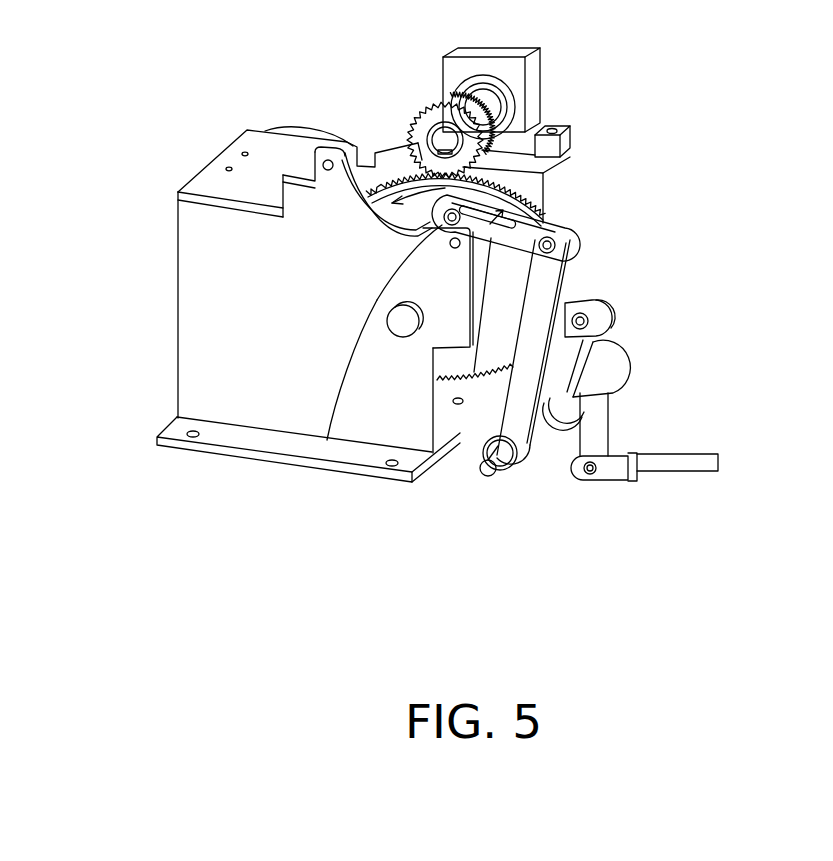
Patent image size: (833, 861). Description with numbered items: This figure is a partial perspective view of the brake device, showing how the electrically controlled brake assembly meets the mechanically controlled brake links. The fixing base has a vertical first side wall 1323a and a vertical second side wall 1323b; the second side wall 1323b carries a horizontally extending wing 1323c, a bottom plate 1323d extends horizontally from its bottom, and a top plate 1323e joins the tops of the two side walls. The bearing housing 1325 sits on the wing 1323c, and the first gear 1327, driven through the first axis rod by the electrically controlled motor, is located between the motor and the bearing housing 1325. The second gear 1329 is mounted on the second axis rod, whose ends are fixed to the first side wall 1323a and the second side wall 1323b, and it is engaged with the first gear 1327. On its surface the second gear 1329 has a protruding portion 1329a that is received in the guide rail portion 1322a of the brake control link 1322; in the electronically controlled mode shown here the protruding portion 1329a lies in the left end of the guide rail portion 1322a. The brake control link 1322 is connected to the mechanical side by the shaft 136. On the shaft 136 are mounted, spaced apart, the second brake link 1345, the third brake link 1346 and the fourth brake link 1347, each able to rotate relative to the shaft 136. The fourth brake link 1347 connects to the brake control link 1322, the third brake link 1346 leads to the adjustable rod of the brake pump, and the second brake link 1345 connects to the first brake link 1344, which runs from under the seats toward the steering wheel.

The first side wall 1323a is at (187, 238).
The second side wall 1323b is at (357, 153).
The wing 1323c is at (398, 133).
The bottom plate 1323d is at (248, 437).
The top plate 1323e is at (227, 155).
The bearing housing 1325 is at (515, 73).
The first gear 1327 is at (548, 128).
The second gear 1329 is at (520, 183).
The protruding portion 1329a is at (327, 440).
The brake control link 1322 is at (540, 222).
The guide rail portion 1322a is at (492, 417).
The fourth brake link 1347 is at (548, 280).
The third brake link 1346 is at (573, 365).
The second brake link 1345 is at (602, 430).
The first brake link 1344 is at (680, 470).
The shaft 136 is at (489, 478).